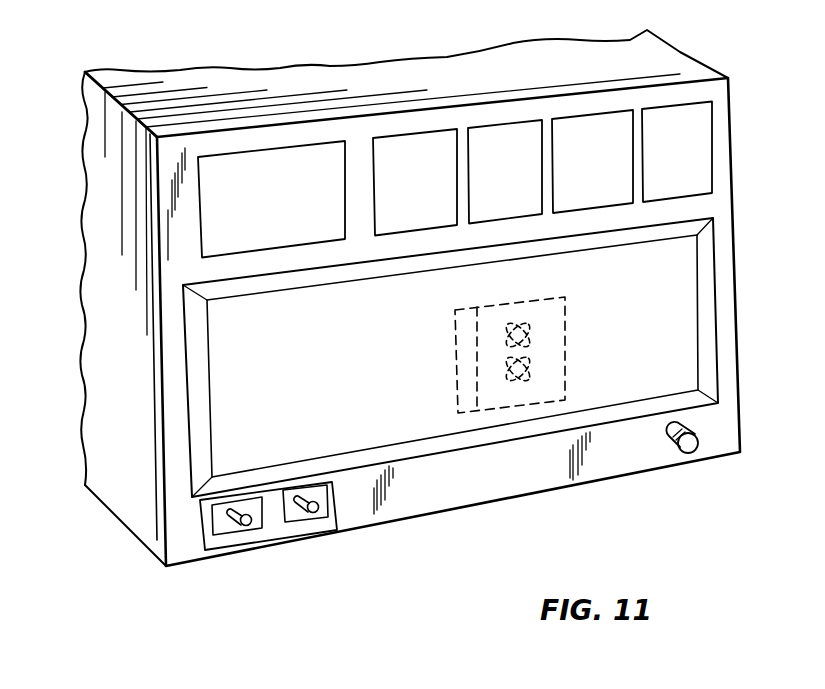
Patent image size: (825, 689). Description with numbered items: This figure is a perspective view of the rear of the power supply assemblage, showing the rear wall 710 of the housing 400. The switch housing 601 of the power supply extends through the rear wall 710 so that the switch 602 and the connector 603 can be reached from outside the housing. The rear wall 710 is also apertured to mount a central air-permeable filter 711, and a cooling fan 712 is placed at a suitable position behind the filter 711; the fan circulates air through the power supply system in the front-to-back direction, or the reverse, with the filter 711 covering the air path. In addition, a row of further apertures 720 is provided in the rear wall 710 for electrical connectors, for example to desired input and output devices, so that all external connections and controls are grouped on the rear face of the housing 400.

The housing 400 is at (92, 227).
The rear wall 710 is at (717, 202).
The central air-permeable filter 711 is at (677, 292).
The cooling fan 712 is at (500, 388).
The apertures 720 is at (492, 132).
The switch housing 601 is at (277, 530).
The switch 602 is at (235, 513).
The connector 603 is at (300, 513).